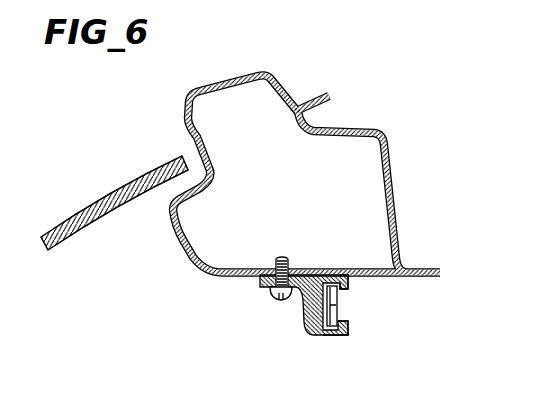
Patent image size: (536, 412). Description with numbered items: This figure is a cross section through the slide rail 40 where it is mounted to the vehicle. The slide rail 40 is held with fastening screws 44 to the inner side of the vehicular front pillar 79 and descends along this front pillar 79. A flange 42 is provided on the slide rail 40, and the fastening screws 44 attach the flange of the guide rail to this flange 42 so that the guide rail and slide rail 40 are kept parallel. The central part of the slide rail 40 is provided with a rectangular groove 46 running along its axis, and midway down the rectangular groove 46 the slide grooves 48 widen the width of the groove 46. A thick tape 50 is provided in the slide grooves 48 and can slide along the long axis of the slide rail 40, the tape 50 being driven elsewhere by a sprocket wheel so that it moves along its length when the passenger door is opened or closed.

The front pillar 79 is at (376, 129).
The slide rail 40 is at (322, 323).
The flange 42 is at (262, 281).
The fastening screws 44 is at (283, 300).
The rectangular groove 46 is at (347, 296).
The slide grooves 48 is at (329, 332).
The thick tape 50 is at (338, 311).